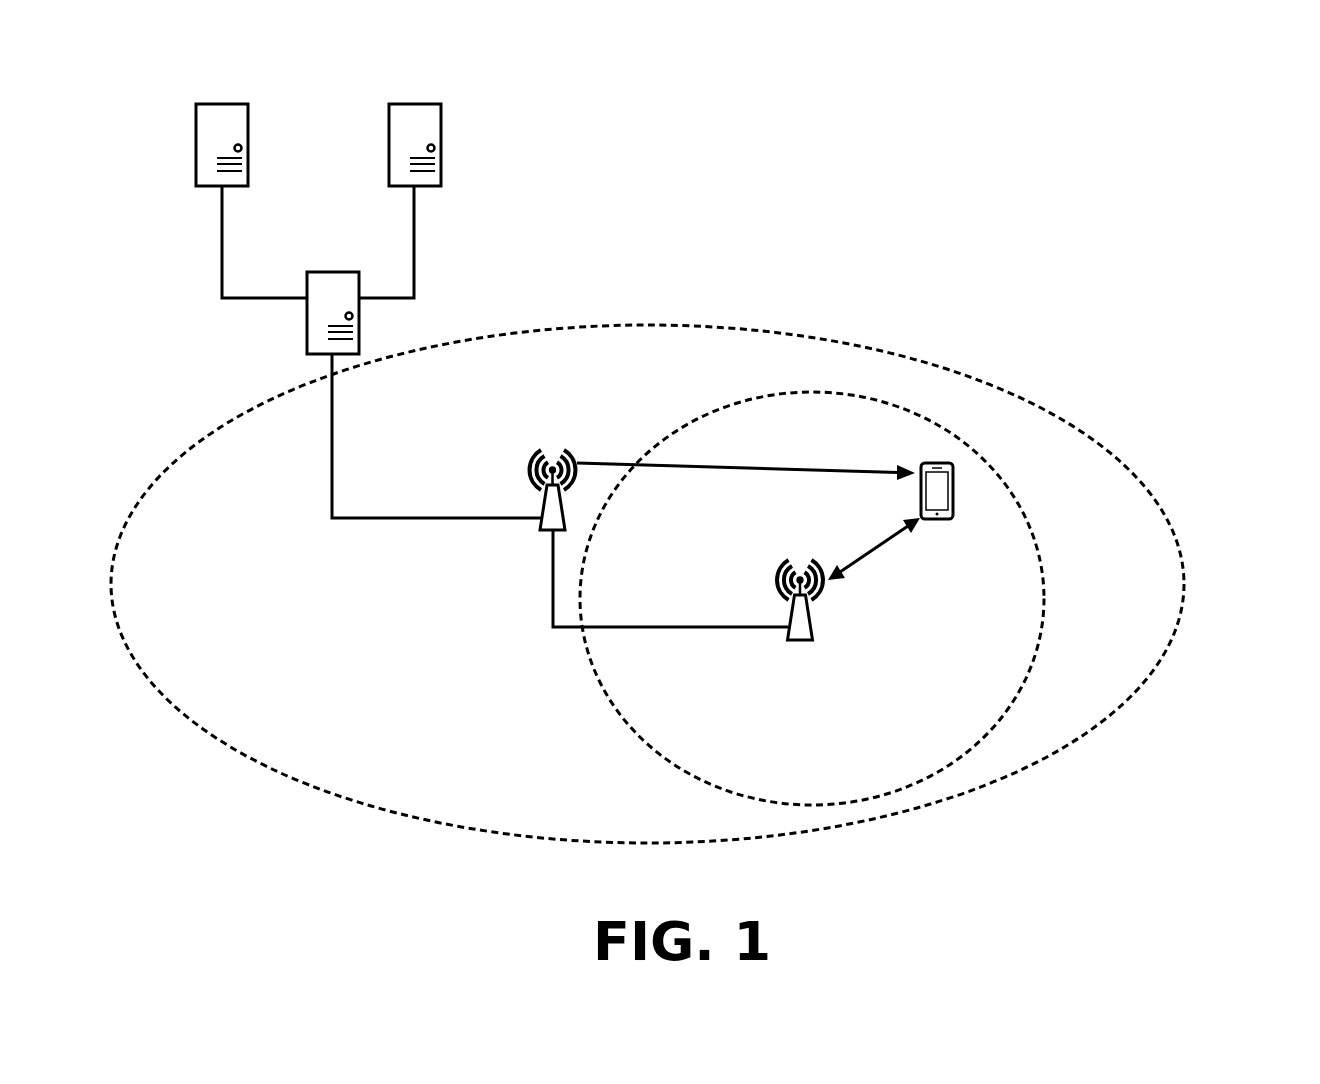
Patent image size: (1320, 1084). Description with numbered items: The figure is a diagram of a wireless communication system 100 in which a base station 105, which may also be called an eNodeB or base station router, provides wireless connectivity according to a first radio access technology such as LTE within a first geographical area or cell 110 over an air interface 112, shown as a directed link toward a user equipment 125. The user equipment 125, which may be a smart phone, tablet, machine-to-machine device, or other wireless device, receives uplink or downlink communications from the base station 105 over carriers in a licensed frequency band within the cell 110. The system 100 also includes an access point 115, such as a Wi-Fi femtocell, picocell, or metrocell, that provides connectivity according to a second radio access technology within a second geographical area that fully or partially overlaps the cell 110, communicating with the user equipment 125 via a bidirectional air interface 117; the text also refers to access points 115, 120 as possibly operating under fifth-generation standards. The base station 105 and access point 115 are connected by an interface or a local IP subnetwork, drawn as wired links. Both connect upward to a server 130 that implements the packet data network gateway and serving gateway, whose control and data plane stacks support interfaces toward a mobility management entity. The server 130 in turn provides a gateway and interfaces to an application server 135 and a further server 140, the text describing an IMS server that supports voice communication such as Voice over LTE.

The wireless communication system 100 is at (1185, 103).
The base station 105 is at (548, 530).
The cell 110 is at (305, 785).
The air interface 112 is at (857, 468).
The access point 115 is at (800, 642).
The air interface 117 is at (883, 543).
The access point 120 is at (1044, 590).
The user equipment 125 is at (953, 487).
The server 130 is at (307, 320).
The application server 135 is at (197, 156).
The core network server 140 is at (441, 156).